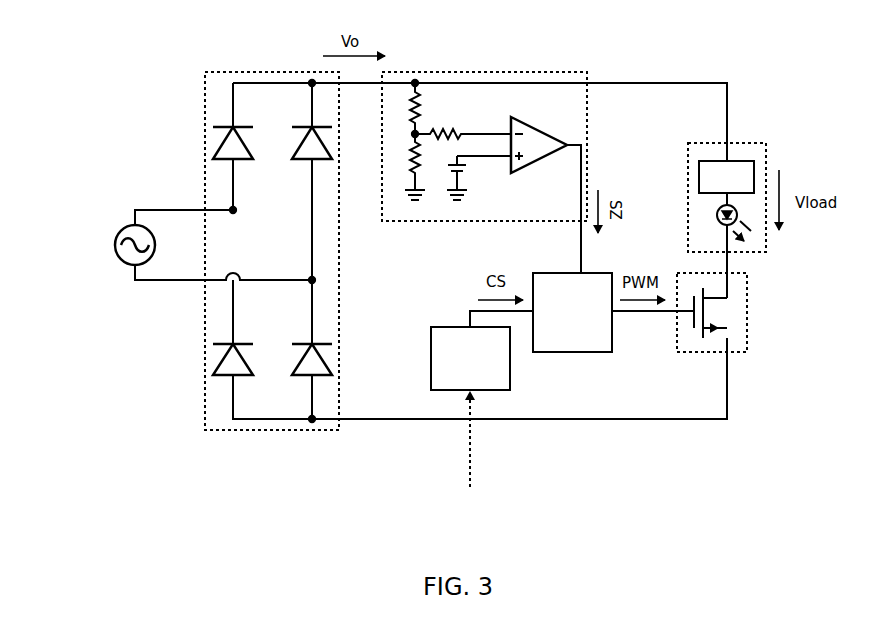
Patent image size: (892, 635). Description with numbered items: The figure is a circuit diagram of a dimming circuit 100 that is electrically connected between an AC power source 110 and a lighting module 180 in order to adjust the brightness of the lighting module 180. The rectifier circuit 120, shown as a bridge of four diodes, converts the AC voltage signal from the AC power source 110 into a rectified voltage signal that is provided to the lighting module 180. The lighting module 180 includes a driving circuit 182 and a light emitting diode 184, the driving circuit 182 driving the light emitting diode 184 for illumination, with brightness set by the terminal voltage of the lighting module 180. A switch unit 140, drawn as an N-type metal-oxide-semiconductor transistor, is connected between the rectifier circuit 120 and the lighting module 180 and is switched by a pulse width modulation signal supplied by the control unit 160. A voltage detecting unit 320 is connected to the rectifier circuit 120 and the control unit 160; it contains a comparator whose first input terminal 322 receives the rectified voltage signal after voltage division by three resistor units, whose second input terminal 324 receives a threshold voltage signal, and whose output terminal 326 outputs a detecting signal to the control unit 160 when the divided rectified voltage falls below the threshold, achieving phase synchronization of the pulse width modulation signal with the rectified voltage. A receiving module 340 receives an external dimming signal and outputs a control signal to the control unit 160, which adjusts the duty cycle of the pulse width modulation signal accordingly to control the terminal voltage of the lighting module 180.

The dimming circuit 100 is at (371, 422).
The AC power source 110 is at (112, 243).
The rectifier circuit 120 is at (204, 93).
The switch unit 140 is at (747, 308).
The control unit 160 is at (572, 312).
The lighting module 180 is at (731, 179).
The driving circuit 182 is at (726, 177).
The light emitting diode 184 is at (717, 218).
The voltage detecting unit 320 is at (508, 154).
The first input terminal 322 is at (511, 134).
The second input terminal 324 is at (511, 160).
The output terminal 326 is at (568, 144).
The receiving module 340 is at (482, 413).